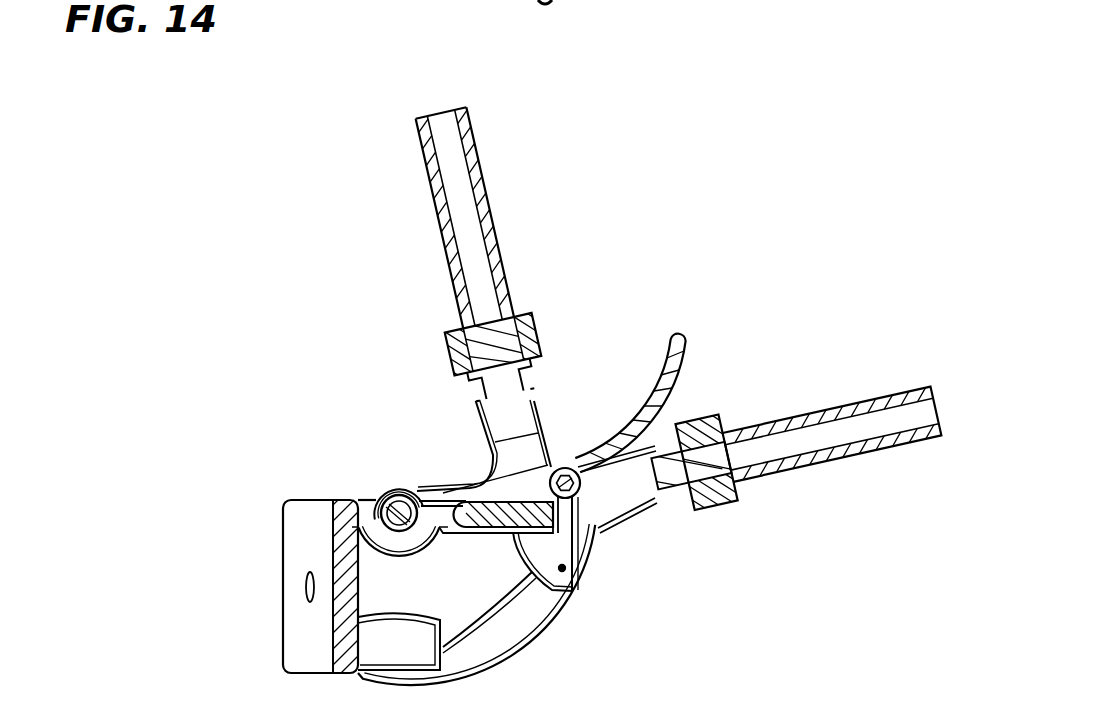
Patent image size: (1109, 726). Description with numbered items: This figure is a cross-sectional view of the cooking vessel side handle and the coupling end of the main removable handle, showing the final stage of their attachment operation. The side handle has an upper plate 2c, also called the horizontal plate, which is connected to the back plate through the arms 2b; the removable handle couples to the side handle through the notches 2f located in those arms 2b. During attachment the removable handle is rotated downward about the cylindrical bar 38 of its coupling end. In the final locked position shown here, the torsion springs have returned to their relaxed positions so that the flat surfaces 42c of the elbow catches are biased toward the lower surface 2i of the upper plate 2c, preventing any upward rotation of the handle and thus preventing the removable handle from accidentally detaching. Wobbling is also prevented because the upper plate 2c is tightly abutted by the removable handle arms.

The arms 2b is at (368, 515).
The cylindrical bar 38 is at (401, 512).
The upper plate 2c is at (484, 508).
The notches 2f is at (399, 522).
The flat surfaces 42c is at (566, 568).
The lower surface 2i is at (490, 533).